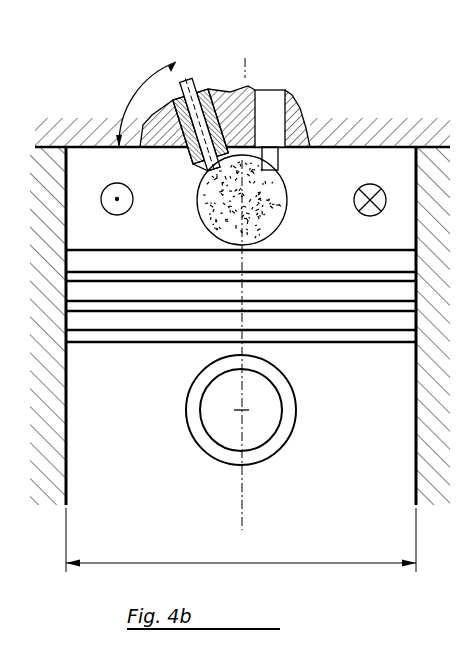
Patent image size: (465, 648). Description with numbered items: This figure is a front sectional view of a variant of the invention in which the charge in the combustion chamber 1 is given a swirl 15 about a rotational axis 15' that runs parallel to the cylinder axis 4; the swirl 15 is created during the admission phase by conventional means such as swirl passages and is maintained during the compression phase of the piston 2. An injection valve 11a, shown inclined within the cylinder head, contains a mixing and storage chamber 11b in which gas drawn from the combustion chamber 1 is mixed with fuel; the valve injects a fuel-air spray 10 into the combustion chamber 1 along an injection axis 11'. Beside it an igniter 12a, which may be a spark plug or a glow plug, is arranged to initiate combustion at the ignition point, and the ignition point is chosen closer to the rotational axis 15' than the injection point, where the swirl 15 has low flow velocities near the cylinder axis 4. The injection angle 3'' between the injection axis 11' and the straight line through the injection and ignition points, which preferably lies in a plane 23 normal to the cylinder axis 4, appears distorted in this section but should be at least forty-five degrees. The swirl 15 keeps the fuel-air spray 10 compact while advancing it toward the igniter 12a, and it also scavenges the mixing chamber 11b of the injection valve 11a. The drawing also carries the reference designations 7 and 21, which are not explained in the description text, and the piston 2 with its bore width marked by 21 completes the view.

The combustion chamber 1 is at (186, 235).
The piston 2 is at (375, 418).
The injection angle 3'' is at (143, 101).
The cylinder axis 4 is at (243, 518).
The cylinder head bottom surface 7 is at (318, 150).
The fuel-air spray 10 is at (277, 208).
The injection axis 11' is at (193, 87).
The injection valve 11a is at (198, 158).
The mixing and storage chamber 11b is at (208, 85).
The igniter 12a is at (275, 98).
The swirl 15 is at (244, 212).
The rotational axis 15' is at (210, 294).
The cylinder bore diameter 21 is at (162, 562).
The plane 23 is at (360, 144).